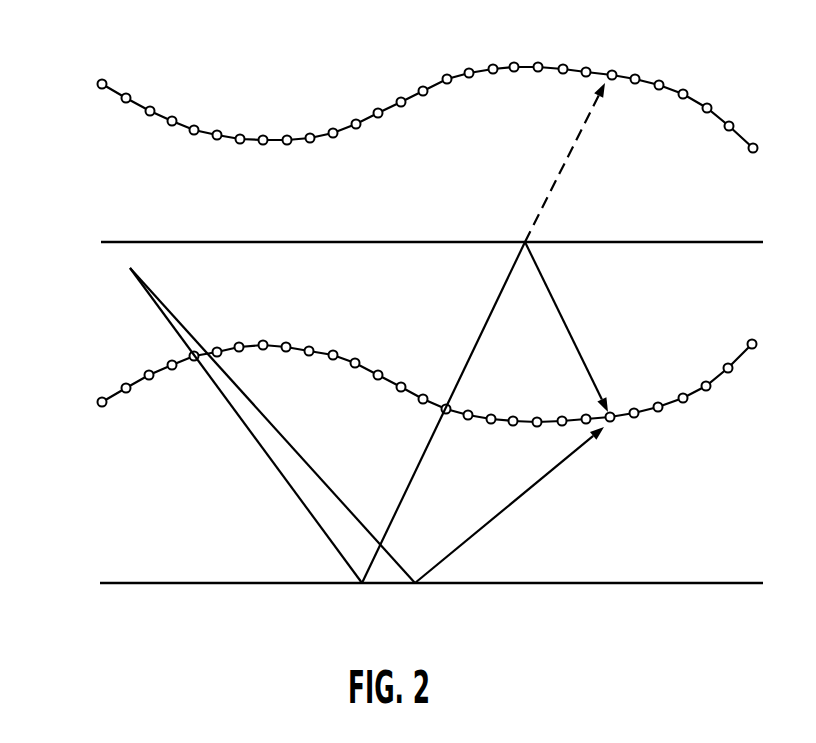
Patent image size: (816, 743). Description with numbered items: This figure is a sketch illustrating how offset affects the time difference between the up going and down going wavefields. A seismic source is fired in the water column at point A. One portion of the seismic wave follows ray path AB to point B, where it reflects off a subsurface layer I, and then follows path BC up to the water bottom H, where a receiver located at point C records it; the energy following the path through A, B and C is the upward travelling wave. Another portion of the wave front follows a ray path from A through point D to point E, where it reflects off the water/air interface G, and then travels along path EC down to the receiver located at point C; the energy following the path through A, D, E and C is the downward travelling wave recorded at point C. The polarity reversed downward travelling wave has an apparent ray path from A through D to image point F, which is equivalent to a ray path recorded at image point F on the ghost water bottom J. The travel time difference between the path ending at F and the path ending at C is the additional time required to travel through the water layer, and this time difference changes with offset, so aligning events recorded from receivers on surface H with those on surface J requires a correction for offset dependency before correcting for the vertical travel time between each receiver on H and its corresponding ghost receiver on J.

The ghost water bottom J is at (147, 73).
The water/air interface G is at (145, 215).
The water bottom H is at (114, 363).
The subsurface layer I is at (139, 558).
The source point A is at (254, 414).
The reflection point on water/air interface E is at (485, 333).
The image point F is at (618, 53).
The receiver point C is at (619, 445).
The intermediate point on downward ray path D is at (359, 610).
The reflection point on subsurface layer B is at (507, 528).